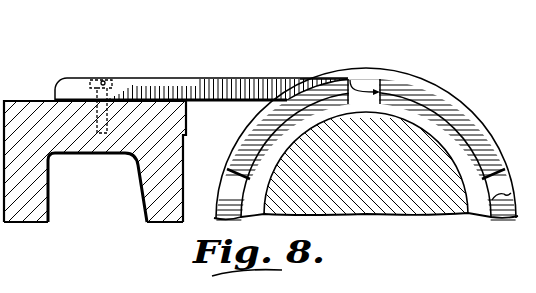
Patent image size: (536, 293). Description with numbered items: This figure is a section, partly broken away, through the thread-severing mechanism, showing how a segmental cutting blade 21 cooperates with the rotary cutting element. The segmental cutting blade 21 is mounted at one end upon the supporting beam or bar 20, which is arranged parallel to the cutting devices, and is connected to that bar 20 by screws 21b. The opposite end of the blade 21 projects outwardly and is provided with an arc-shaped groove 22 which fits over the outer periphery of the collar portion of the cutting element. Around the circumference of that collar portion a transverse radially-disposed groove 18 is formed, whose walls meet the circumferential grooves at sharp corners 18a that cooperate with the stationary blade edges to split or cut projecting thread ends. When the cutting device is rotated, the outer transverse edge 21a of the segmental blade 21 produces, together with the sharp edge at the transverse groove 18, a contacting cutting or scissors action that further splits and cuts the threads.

The transverse radially-disposed groove 18 is at (368, 81).
The corners 18a is at (349, 78).
The supporting beam or bar 20 is at (27, 203).
The segmental cutting blade 21 is at (211, 57).
The outer transverse edge 21a is at (344, 75).
The screws 21b is at (110, 80).
The arc-shaped groove 22 is at (310, 93).